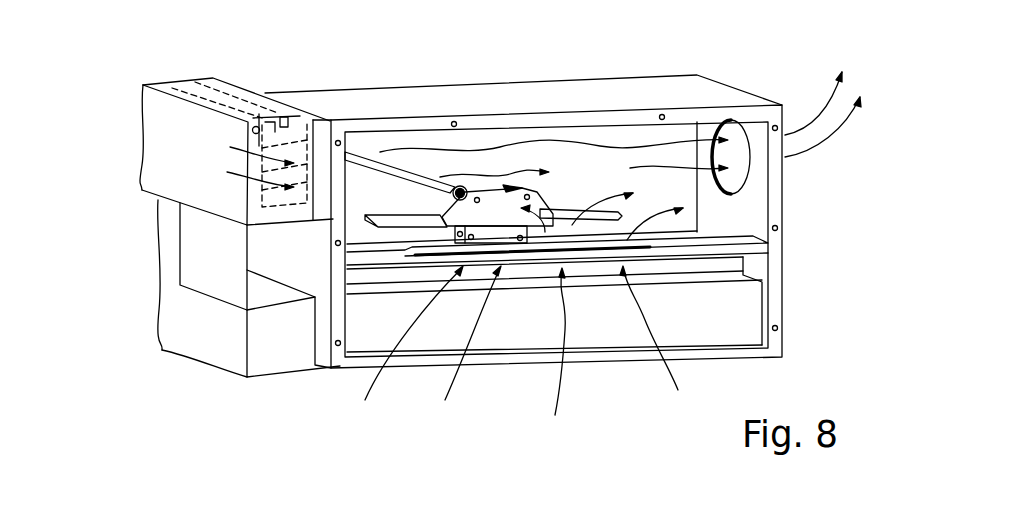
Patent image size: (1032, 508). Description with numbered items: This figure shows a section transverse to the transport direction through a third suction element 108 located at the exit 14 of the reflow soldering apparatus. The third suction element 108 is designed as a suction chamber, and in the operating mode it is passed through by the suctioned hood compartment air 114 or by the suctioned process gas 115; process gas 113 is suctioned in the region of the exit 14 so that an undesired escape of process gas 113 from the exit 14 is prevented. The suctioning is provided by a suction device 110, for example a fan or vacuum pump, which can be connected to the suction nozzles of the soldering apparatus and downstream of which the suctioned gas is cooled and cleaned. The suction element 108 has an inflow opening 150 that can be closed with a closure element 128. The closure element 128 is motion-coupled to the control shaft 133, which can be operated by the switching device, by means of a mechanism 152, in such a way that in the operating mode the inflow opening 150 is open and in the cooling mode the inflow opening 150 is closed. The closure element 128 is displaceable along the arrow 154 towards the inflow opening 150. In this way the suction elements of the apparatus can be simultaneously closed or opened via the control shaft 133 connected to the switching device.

The exit 14 is at (307, 402).
The third suction element 108 is at (612, 93).
The suction device 110 is at (190, 157).
The process gas 113 is at (468, 343).
The hood compartment air 114 is at (187, 178).
The suctioned process gas 115 is at (860, 97).
The closure element 128 is at (470, 212).
The control shaft 133 is at (257, 112).
The inflow opening 150 is at (540, 266).
The mechanism 152 is at (464, 191).
The arrow 154 is at (540, 205).